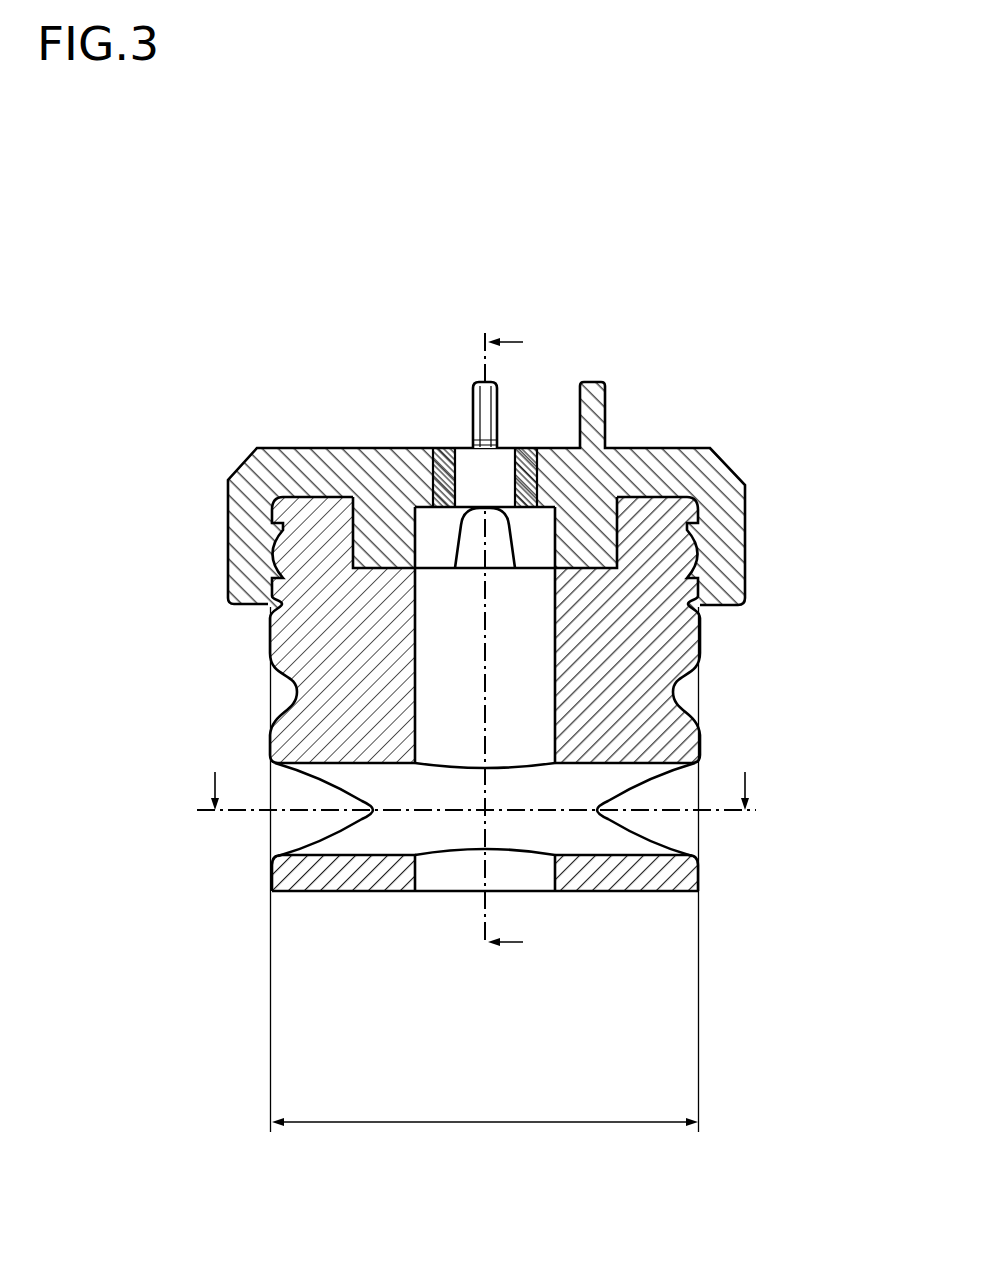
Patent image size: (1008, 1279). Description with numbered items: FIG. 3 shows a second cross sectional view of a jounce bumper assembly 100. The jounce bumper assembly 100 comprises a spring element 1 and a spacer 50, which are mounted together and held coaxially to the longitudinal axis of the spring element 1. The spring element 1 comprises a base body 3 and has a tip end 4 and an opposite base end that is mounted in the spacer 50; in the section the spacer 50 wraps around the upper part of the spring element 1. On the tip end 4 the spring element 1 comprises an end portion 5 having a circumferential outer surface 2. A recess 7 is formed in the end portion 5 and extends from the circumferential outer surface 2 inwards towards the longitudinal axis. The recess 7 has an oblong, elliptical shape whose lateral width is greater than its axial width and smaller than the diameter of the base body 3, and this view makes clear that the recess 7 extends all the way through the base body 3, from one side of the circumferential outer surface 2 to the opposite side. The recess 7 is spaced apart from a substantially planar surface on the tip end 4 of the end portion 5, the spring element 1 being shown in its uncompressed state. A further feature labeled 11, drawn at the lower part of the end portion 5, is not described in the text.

The jounce bumper assembly 100 is at (179, 280).
The spacer 50 is at (758, 503).
The spring element 1 is at (316, 648).
The base body 3 is at (712, 638).
The end portion 5 is at (152, 753).
The recess 7 is at (290, 837).
The circumferential outer surface 2 is at (259, 885).
The tip end 4 is at (327, 906).
The recess 11 is at (361, 893).